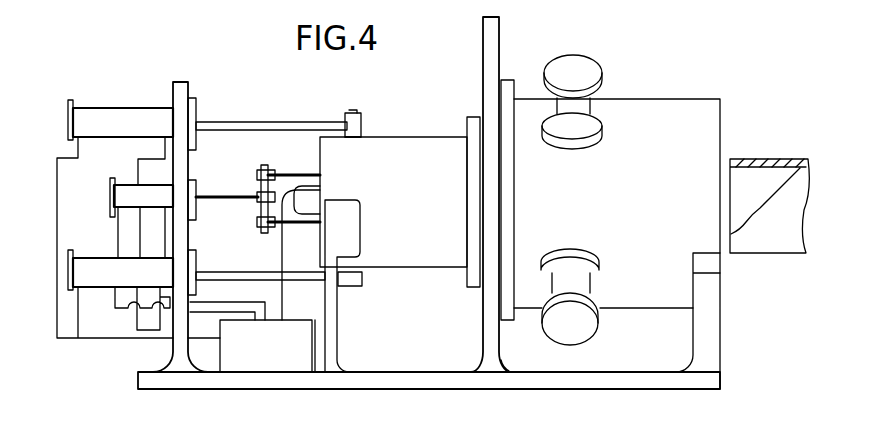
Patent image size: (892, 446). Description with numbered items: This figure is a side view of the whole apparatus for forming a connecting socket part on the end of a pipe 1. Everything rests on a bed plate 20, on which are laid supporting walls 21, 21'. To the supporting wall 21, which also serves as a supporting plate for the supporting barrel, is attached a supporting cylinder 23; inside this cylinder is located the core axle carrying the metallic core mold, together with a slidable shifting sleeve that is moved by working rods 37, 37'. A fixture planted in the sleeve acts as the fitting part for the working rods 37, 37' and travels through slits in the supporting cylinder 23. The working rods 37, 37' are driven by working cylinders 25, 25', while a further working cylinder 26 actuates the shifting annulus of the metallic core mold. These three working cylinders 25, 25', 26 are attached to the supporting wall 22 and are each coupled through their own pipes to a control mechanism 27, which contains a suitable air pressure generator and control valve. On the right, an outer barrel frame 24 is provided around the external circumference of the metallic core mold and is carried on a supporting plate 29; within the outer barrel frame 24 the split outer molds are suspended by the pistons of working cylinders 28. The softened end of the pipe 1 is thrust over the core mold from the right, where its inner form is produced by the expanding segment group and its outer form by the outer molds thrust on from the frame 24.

The pipe 1 is at (761, 158).
The bed plate 20 is at (424, 372).
The supporting wall 21 is at (475, 194).
The supporting wall 21' is at (354, 286).
The supporting wall 22 is at (189, 87).
The supporting cylinder 23 is at (408, 141).
The outer barrel frame 24 is at (686, 101).
The working cylinder 25 is at (120, 107).
The working cylinder 25' is at (120, 288).
The working cylinder 26 is at (123, 186).
The control mechanism 27 is at (277, 354).
The working cylinder 28 is at (592, 72).
The supporting plate 29 is at (712, 340).
The working rod 37 is at (278, 110).
The working rod 37' is at (279, 261).